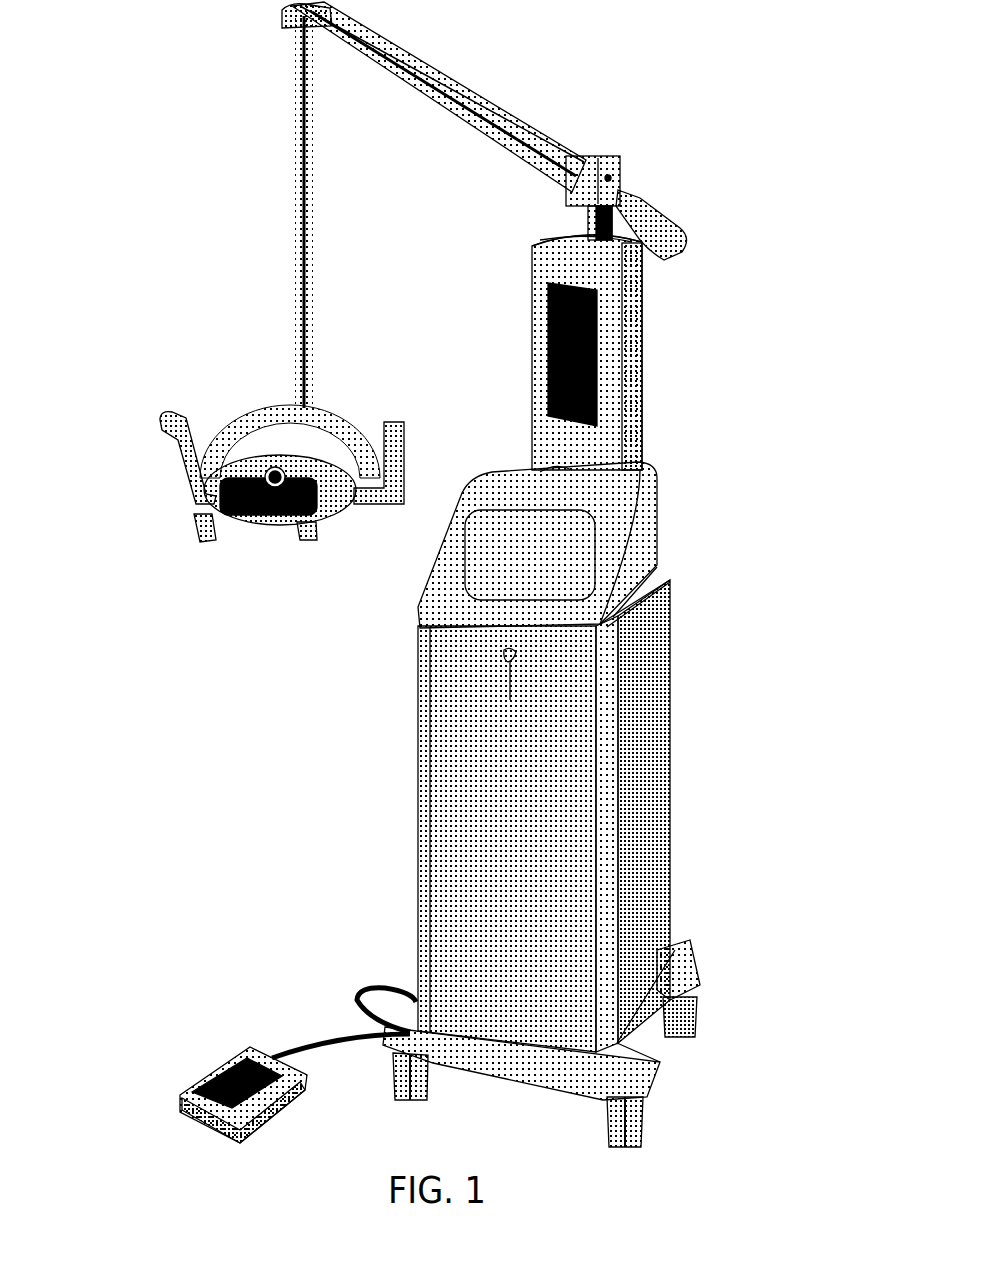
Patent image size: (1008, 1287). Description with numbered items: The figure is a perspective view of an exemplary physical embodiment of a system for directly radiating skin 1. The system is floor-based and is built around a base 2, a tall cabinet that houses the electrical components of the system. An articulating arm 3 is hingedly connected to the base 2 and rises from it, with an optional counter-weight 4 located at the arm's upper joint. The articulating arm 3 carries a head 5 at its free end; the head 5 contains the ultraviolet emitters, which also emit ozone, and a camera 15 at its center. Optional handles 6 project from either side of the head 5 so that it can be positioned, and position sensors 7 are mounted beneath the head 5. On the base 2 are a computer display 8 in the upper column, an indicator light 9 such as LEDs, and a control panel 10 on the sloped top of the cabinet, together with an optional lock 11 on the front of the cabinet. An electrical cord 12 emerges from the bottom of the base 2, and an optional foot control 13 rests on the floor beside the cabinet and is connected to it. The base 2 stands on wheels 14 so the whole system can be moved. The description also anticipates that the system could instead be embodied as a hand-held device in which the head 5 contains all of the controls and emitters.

The system for directly radiating skin 1 is at (599, 98).
The base 2 is at (652, 760).
The articulating arm 3 is at (288, 103).
The counter-weight 4 is at (690, 236).
The head 5 is at (254, 456).
The handles 6 is at (160, 436).
The position sensors 7 is at (302, 542).
The computer display 8 is at (598, 362).
The indicator light 9 is at (565, 486).
The control panel 10 is at (572, 565).
The lock 11 is at (482, 648).
The electrical cord 12 is at (360, 995).
The foot control 13 is at (284, 1088).
The wheels 14 is at (642, 1138).
The camera 15 is at (292, 468).